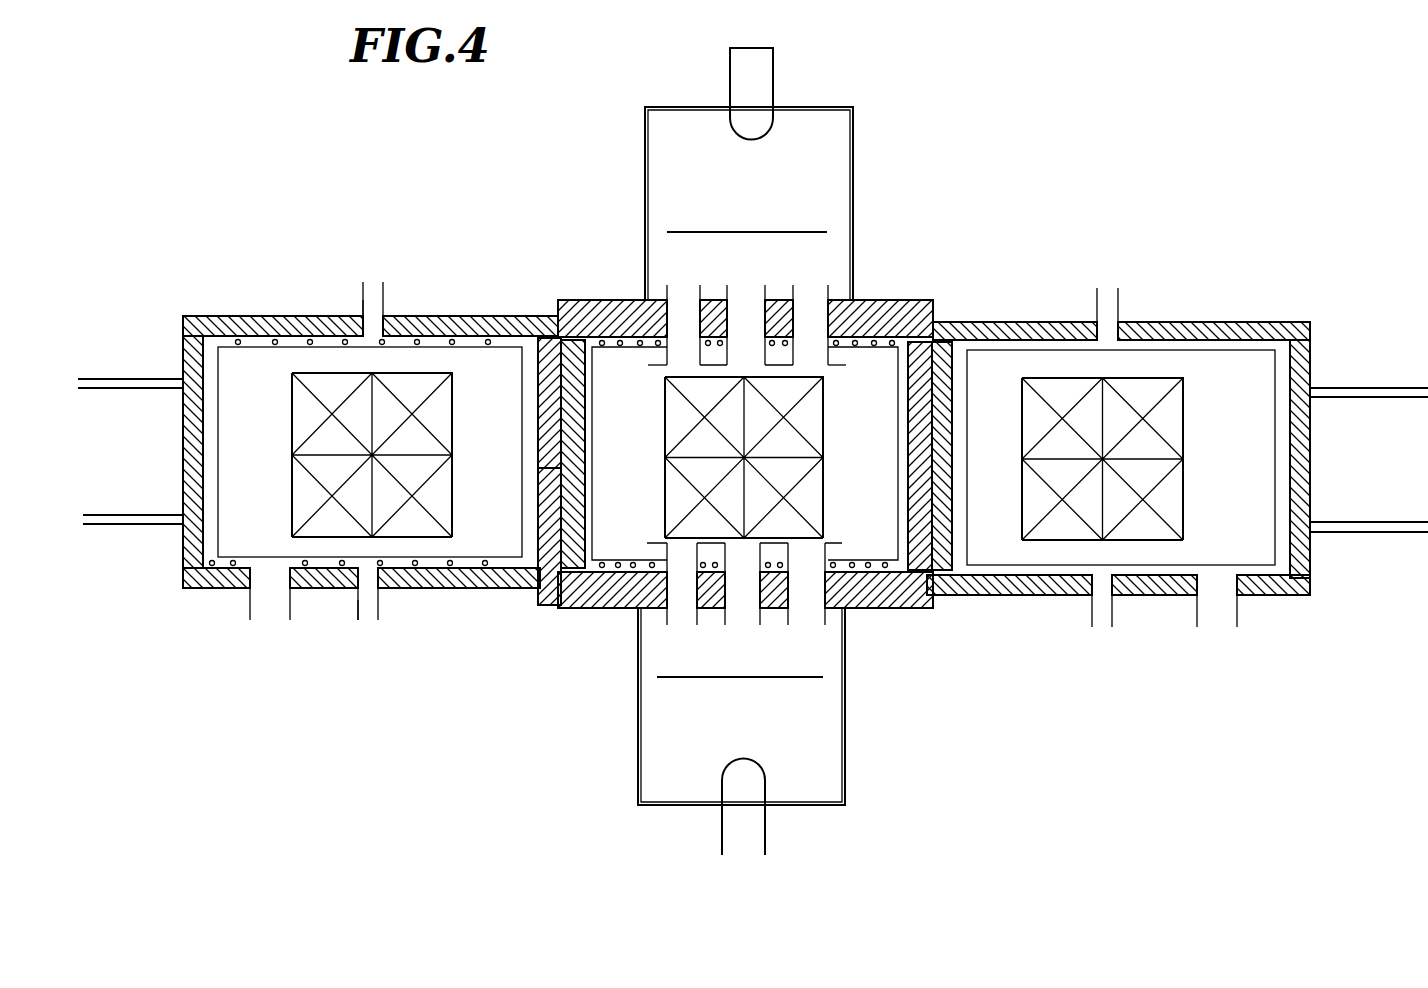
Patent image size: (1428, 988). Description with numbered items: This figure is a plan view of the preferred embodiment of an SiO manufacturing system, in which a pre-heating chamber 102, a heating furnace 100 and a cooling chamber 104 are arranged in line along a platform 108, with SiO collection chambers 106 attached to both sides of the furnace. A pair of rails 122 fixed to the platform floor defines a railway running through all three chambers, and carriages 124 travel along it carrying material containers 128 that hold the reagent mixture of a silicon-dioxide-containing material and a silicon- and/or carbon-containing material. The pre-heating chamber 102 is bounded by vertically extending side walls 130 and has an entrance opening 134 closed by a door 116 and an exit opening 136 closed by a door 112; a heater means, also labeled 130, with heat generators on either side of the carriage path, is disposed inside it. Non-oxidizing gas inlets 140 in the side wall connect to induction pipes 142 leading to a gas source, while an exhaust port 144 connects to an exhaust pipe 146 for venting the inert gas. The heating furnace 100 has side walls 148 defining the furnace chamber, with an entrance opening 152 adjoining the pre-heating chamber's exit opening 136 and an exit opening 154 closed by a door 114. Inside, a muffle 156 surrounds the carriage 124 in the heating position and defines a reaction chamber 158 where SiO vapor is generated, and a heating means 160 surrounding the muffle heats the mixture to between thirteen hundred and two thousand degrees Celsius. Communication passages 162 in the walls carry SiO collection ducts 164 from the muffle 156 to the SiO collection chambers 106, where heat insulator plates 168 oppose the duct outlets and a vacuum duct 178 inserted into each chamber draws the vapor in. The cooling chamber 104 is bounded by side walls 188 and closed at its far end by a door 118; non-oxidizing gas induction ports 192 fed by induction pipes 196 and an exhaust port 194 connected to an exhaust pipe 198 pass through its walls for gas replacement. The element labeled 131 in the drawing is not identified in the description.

The heating furnace 100 is at (908, 290).
The pre-heating chamber 102 is at (458, 305).
The cooling chamber 104 is at (1194, 310).
The SiO collection chambers 106 is at (862, 160).
The platform 108 is at (105, 400).
The door 112 is at (545, 348).
The door 114 is at (970, 367).
The door 116 is at (188, 538).
The door 118 is at (1302, 470).
The rails 122 is at (145, 378).
The carriage 124 is at (453, 513).
The material container 128 is at (443, 428).
The side walls 130 is at (298, 318).
The electrode 131 is at (433, 567).
The entrance opening 134 is at (215, 588).
The exit opening 136 is at (547, 605).
The non-oxidizing gas inlets 140 is at (381, 318).
The induction pipes 142 is at (362, 302).
The exhaust port 144 is at (288, 582).
The exhaust pipe 146 is at (249, 613).
The side walls 148 is at (620, 302).
The entrance opening 152 is at (573, 300).
The exit opening 154 is at (922, 585).
The muffle 156 is at (817, 320).
The reaction chamber 158 is at (748, 320).
The heating means 160 is at (890, 365).
The communication passages 162 is at (683, 332).
The SiO collection ducts 164 is at (685, 320).
The heat insulator plates 168 is at (764, 230).
The vacuum duct 178 is at (763, 70).
The side walls 188 is at (1262, 322).
The non-oxidizing gas induction ports 192 is at (1113, 320).
The exhaust port 194 is at (1236, 583).
The non-oxidizing gas induction pipes 196 is at (1095, 320).
The exhaust pipe 198 is at (1238, 627).